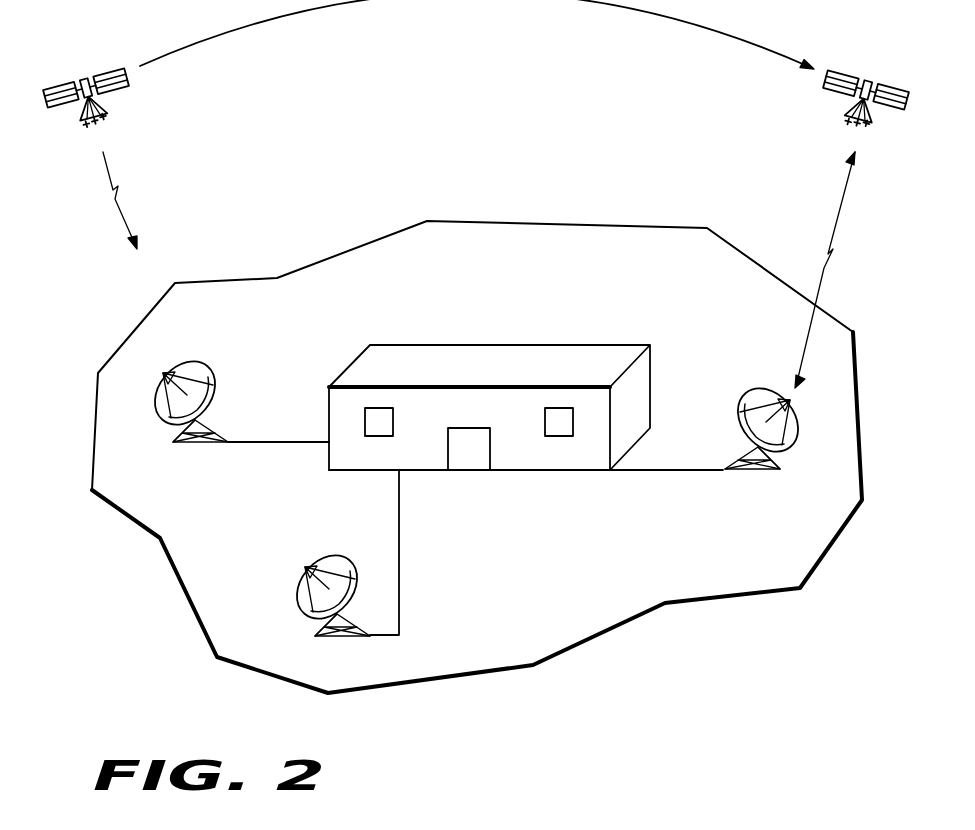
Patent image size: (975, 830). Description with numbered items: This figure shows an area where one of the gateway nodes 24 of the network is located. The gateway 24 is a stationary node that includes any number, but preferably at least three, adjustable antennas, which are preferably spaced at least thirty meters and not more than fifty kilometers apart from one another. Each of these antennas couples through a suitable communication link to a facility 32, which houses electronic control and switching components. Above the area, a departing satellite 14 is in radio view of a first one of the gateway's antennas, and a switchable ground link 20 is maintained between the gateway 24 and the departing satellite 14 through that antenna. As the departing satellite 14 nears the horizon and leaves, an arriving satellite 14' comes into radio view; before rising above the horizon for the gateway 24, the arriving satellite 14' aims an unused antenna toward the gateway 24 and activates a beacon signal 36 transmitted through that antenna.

The departing satellite 14 is at (846, 108).
The arriving satellite 14' is at (105, 107).
The beacon signal 36 is at (110, 190).
The switchable ground link 20 is at (828, 278).
The facility 32 is at (559, 357).
The gateway node 24 is at (545, 472).